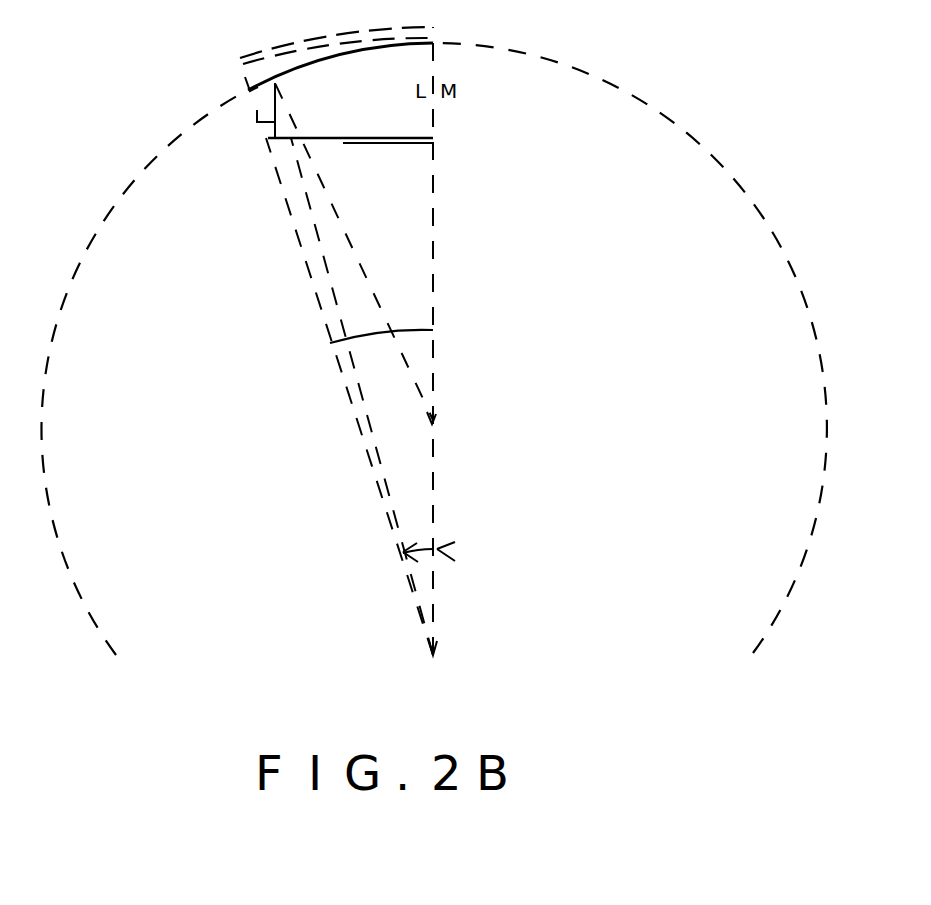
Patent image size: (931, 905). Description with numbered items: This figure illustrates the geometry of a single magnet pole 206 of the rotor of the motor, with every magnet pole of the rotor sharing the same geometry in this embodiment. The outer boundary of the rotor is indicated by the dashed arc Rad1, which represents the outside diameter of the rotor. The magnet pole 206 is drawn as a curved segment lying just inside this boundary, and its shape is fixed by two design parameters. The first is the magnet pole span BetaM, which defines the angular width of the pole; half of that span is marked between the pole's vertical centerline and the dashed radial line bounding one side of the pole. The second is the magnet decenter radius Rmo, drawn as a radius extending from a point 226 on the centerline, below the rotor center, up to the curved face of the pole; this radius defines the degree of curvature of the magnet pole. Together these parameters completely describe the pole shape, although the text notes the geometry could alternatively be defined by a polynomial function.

The magnet pole 206 is at (402, 122).
The center point of radius Rmo 226 is at (436, 655).
The outside diameter of the rotor Rad1 is at (365, 38).
The magnet decenter radius Rmo is at (345, 237).